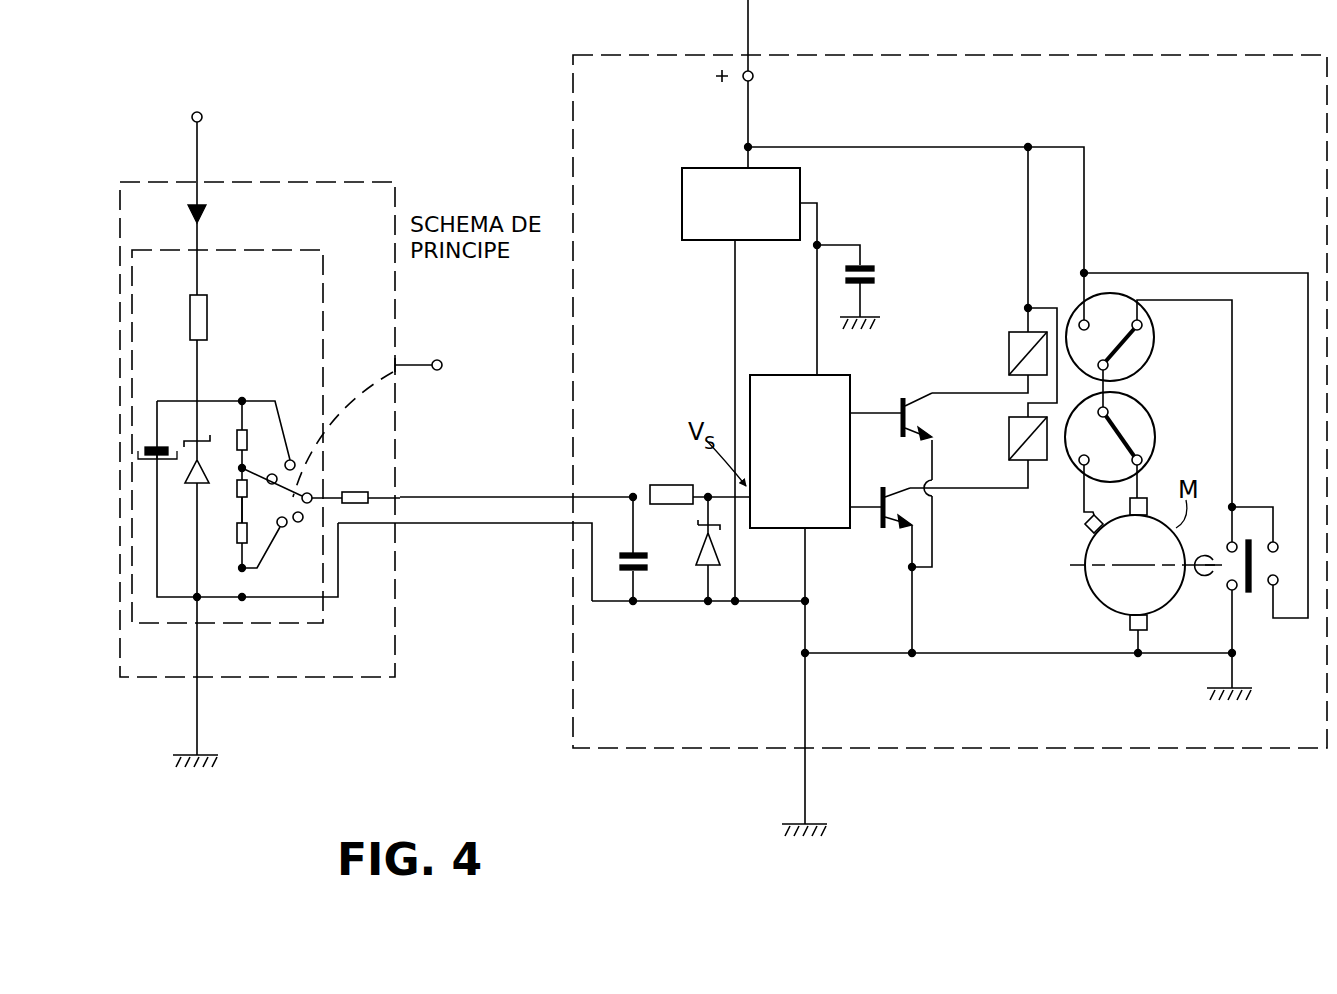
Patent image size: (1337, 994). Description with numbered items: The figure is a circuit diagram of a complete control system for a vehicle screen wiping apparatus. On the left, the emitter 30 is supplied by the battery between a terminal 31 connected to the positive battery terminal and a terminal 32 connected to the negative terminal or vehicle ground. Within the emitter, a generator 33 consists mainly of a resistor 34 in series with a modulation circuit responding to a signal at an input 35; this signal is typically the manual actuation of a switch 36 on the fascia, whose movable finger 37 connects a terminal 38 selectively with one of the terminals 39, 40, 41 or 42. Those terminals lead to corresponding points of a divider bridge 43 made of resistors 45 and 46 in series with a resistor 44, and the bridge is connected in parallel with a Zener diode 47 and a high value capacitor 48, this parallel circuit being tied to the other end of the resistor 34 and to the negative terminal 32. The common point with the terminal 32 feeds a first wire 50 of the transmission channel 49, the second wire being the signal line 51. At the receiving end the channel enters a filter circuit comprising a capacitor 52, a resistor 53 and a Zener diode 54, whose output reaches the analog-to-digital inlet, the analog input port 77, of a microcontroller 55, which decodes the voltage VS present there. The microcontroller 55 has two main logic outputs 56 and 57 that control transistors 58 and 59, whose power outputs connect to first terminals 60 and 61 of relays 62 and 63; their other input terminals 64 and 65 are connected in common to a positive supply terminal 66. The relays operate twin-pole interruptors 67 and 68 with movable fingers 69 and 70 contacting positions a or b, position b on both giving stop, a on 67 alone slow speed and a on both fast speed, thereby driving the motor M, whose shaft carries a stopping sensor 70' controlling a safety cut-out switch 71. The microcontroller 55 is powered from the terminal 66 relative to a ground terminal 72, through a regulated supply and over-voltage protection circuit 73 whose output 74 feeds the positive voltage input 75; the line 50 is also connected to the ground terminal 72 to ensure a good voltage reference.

The emitter 30 is at (304, 181).
The terminal 31 is at (202, 116).
The terminal 32 is at (202, 752).
The generator 33 is at (262, 249).
The resistor 34 is at (189, 298).
The input 35 is at (441, 362).
The switch 36 is at (302, 520).
The movable finger 37 is at (293, 500).
The terminal 38 is at (311, 494).
The terminal 39 is at (292, 460).
The terminal 40 is at (260, 444).
The terminal 41 is at (243, 512).
The terminal 42 is at (272, 550).
The divider bridge 43 is at (264, 396).
The resistor 44 is at (238, 430).
The resistor 45 is at (237, 484).
The resistor 46 is at (237, 545).
The Zener diode 47 is at (190, 437).
The high value capacitor 48 is at (138, 462).
The transmission channel 49 is at (491, 484).
The first wire 50 is at (420, 524).
The signal wire 51 is at (427, 495).
The capacitor 52 is at (358, 491).
The resistor 53 is at (665, 484).
The Zener diode 54 is at (700, 551).
The microcontroller 55 is at (779, 372).
The logic output 56 is at (851, 412).
The logic output 57 is at (851, 506).
The transistor 58 is at (907, 399).
The transistor 59 is at (887, 497).
The first terminal 60 is at (1022, 380).
The first terminal 61 is at (1032, 473).
The relay 62 is at (1009, 345).
The relay 63 is at (1009, 435).
The input terminal 64 is at (1027, 328).
The input terminal 65 is at (1009, 419).
The positive supply terminal 66 is at (754, 75).
The interruptor 67 is at (1154, 338).
The interruptor 68 is at (1152, 414).
The movable finger 69 is at (1122, 348).
The movable finger 70 is at (1157, 440).
The sensor 70' is at (1192, 596).
The safety cut-out switch 71 is at (1251, 593).
The terminal 72 is at (815, 822).
The regulated supply and over-voltage protection circuit 73 is at (681, 195).
The output 74 is at (802, 191).
The positive voltage input 75 is at (812, 373).
The analog input port 77 is at (750, 527).